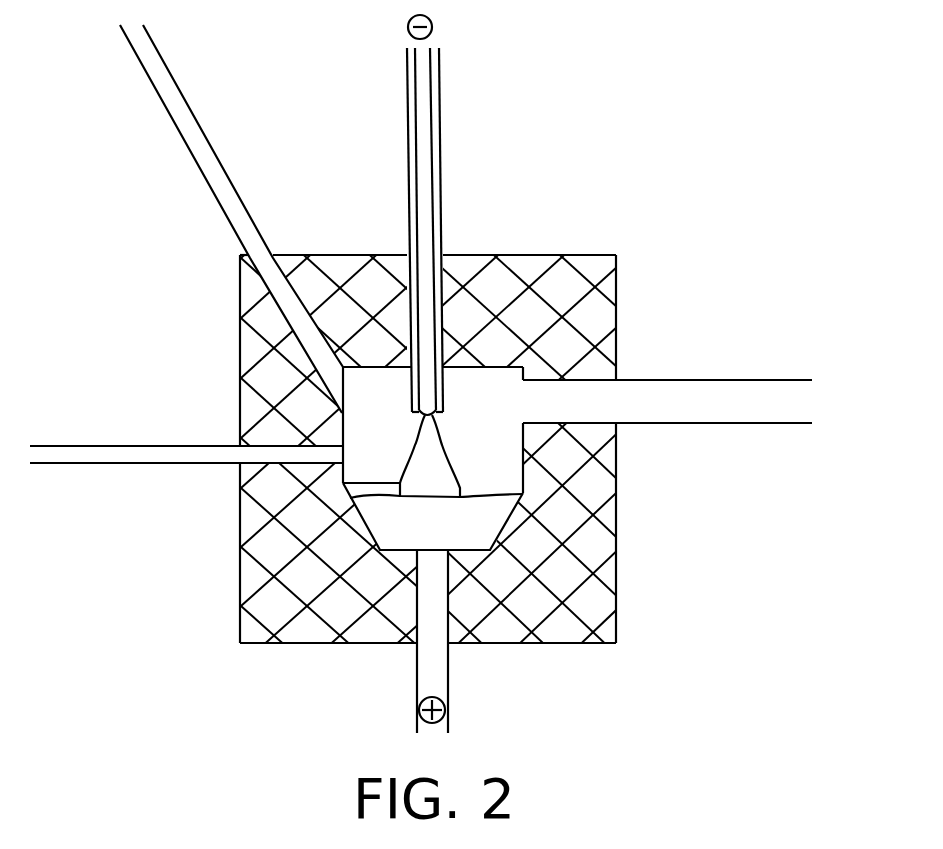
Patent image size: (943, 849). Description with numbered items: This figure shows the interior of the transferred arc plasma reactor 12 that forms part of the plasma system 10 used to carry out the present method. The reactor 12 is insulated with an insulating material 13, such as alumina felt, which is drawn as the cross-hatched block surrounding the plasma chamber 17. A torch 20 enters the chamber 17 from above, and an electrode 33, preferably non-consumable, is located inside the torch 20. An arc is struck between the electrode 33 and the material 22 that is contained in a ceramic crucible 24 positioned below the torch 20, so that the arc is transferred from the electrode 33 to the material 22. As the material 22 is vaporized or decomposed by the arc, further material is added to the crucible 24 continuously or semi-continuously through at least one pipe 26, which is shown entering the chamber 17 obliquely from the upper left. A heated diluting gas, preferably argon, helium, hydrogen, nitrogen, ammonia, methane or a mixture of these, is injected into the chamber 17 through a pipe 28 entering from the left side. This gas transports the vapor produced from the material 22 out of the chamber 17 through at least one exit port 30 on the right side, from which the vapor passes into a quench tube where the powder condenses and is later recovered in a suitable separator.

The plasma system 10 is at (356, 483).
The transferred arc plasma reactor 12 is at (303, 662).
The insulating material 13 is at (563, 613).
The plasma chamber 17 is at (478, 364).
The torch 20 is at (440, 135).
The material 22 is at (497, 517).
The ceramic crucible 24 is at (515, 500).
The pipe 26 is at (204, 174).
The pipe 28 is at (160, 446).
The exit port 30 is at (666, 388).
The electrode 33 is at (436, 419).